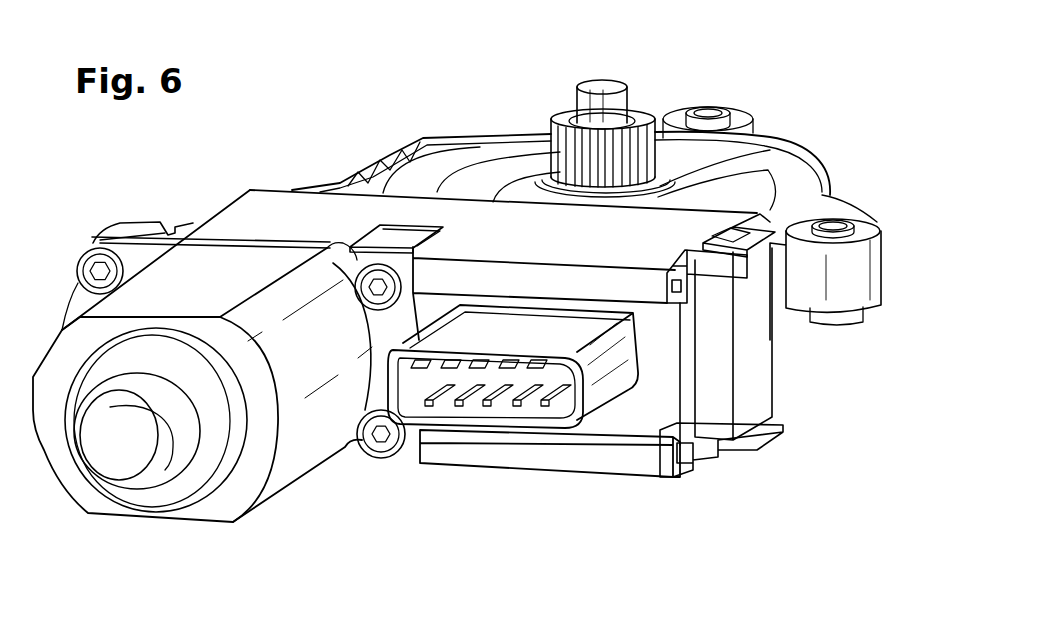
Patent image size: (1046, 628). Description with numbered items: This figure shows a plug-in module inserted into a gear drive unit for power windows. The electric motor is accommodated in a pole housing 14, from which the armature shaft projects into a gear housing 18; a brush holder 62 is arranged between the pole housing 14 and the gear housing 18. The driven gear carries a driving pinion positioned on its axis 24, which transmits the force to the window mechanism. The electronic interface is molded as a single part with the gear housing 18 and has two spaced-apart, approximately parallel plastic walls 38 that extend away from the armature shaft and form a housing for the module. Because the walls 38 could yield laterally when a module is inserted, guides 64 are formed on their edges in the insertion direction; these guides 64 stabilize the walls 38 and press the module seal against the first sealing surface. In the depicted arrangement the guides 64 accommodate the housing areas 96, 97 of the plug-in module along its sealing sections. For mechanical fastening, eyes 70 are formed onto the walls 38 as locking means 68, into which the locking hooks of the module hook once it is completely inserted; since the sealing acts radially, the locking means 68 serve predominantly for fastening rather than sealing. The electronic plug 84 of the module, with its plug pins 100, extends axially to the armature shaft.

The pole housing 14 is at (168, 282).
The gear housing 18 is at (333, 213).
The axis 24 is at (588, 108).
The walls 38 is at (547, 227).
The brush holder 62 is at (252, 242).
The guides 64 is at (697, 447).
The locking means 68 is at (797, 175).
The eyes 70 is at (757, 227).
The electronic plug 84 is at (613, 380).
The housing area 96 is at (660, 393).
The housing area 97 is at (753, 342).
The plug pins 100 is at (490, 365).